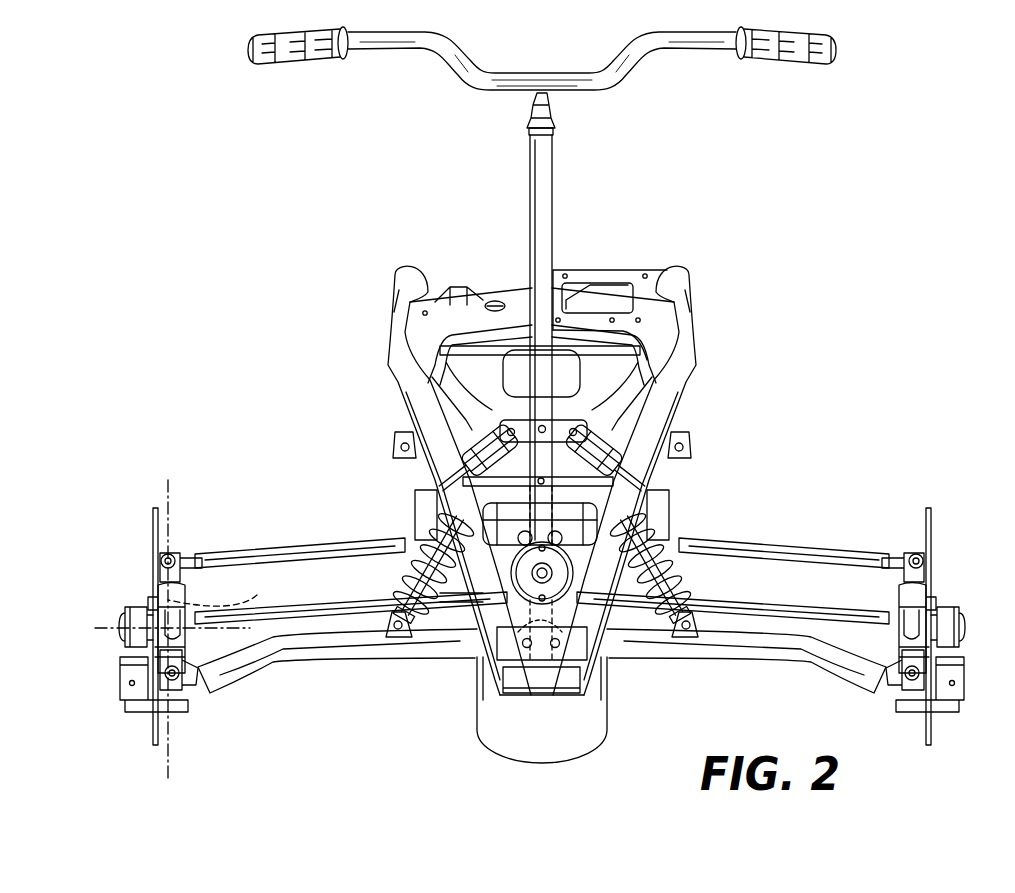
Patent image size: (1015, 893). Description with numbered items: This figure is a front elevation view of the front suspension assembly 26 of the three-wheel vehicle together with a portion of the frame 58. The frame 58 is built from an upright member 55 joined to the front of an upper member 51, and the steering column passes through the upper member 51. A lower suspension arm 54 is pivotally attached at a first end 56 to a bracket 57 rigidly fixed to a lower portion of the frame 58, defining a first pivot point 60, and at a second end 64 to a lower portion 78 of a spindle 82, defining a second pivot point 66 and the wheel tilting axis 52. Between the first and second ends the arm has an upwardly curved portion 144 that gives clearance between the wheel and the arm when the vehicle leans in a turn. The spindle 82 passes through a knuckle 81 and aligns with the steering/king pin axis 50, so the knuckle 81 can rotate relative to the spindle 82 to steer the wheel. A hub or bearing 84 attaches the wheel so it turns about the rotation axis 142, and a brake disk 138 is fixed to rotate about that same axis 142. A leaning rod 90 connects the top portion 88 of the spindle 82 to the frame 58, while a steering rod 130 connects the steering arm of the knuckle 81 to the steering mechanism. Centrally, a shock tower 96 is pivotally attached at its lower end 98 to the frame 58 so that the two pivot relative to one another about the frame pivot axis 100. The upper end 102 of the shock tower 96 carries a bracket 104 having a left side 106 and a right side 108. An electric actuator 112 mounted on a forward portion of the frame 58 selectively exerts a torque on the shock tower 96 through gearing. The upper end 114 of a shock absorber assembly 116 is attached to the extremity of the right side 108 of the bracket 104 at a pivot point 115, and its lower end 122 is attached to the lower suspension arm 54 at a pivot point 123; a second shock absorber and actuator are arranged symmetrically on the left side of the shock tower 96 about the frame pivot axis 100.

The front suspension assembly 26 is at (542, 530).
The steering/king pin axis 50 is at (170, 490).
The upper member 51 is at (690, 291).
The wheel tilting axis 52 is at (180, 675).
The lower suspension arm 54 is at (337, 674).
The upright member 55 is at (688, 440).
The first end 56 is at (485, 652).
The bracket 57 is at (553, 647).
The frame 58 is at (586, 473).
The first pivot point 60 is at (527, 648).
The second end 64 is at (208, 720).
The second pivot point 66 is at (201, 720).
The lower portion 78 is at (172, 655).
The knuckle 81 is at (187, 634).
The spindle 82 is at (217, 588).
The hub or bearing 84 is at (132, 612).
The top portion 88 is at (193, 560).
The leaning rod 90 is at (298, 555).
The shock tower 96 is at (580, 570).
The lower end 98 is at (630, 608).
The frame pivot axis 100 is at (578, 680).
The upper end 102 is at (596, 517).
The bracket 104 is at (543, 438).
The left side 106 is at (598, 388).
The right side 108 is at (523, 427).
The electric actuator 112 is at (622, 558).
The upper end 114 is at (430, 428).
The pivot point 115 is at (480, 428).
The shock absorber assembly 116 is at (437, 539).
The lower end 122 is at (420, 647).
The pivot point 123 is at (398, 630).
The steering rod 130 is at (320, 605).
The brake disk 138 is at (160, 530).
The rotation axis 142 is at (106, 626).
The upwardly curved portion 144 is at (287, 670).